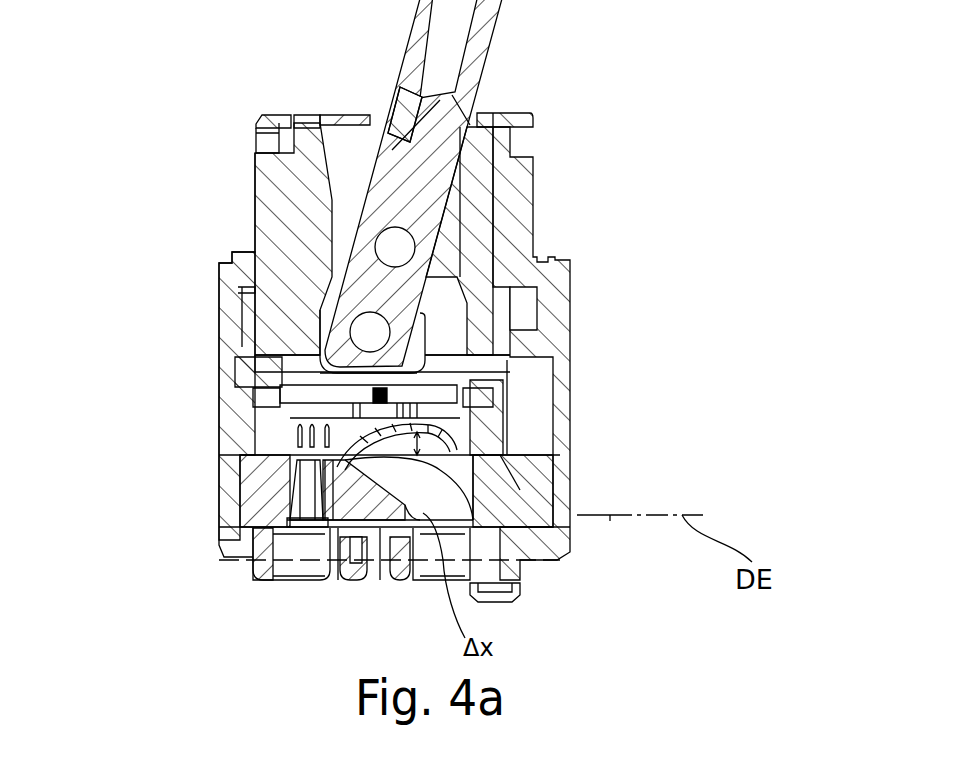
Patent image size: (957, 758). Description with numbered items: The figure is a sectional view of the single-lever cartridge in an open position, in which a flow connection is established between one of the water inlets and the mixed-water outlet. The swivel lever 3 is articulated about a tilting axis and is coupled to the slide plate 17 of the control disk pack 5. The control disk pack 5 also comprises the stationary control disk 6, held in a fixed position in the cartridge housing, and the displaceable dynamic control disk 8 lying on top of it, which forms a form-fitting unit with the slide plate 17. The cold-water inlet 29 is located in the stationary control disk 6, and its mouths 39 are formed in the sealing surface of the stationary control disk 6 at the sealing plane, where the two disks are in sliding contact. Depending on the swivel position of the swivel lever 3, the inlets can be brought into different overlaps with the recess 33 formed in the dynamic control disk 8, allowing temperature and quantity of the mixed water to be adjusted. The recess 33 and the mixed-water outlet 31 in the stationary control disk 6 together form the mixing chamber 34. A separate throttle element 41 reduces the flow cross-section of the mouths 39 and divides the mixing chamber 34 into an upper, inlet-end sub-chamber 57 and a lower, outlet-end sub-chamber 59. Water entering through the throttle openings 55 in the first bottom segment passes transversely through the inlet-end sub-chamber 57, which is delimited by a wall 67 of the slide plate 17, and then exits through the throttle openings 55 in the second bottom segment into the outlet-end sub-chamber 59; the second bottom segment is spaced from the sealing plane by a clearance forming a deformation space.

The swivel lever 3 is at (500, 58).
The control disk pack 5 is at (83, 407).
The stationary control disk 6 is at (247, 472).
The dynamic control disk 8 is at (290, 422).
The slide plate 17 is at (300, 385).
The cold-water inlet 29 is at (310, 498).
The mixed-water outlet 31 is at (420, 495).
The recess 33 is at (370, 500).
The mixing chamber 34 is at (665, 290).
The mouths 39 is at (330, 465).
The throttle element 41 is at (373, 470).
The throttle openings 55 is at (445, 425).
The inlet-end sub-chamber 57 is at (507, 360).
The outlet-end sub-chamber 59 is at (460, 490).
The wall of the slide plate 67 is at (533, 258).